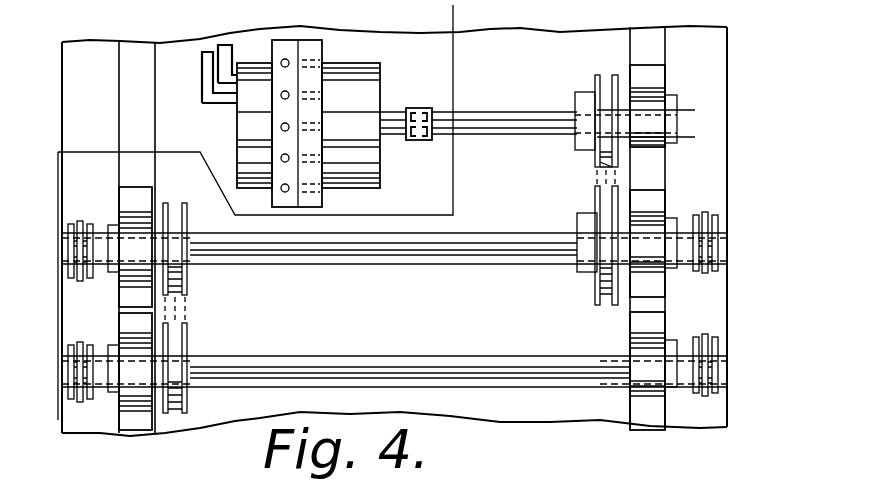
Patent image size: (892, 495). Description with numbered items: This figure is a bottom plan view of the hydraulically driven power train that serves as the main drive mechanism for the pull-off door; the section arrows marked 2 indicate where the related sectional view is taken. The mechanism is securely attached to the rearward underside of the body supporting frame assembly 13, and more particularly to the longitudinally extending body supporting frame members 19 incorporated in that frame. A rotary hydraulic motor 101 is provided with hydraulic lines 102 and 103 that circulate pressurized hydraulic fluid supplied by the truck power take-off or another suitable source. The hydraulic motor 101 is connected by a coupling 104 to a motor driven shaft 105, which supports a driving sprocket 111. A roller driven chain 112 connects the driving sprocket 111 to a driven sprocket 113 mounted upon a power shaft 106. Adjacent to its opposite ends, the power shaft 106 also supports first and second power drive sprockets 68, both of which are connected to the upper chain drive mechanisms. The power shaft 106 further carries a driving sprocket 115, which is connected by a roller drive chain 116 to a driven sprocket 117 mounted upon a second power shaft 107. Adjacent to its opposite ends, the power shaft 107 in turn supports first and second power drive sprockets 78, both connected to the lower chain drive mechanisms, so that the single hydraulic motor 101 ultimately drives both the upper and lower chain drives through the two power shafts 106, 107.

The body supporting frame assembly 13 is at (86, 42).
The body supporting frame members 19 is at (163, 427).
The section line 2 is at (452, 13).
The power drive sprockets 68 is at (89, 278).
The power drive sprockets 78 is at (83, 343).
The rotary hydraulic motor 101 is at (363, 62).
The hydraulic line 102 is at (215, 57).
The hydraulic line 103 is at (207, 92).
The coupling 104 is at (420, 108).
The motor driven shaft 105 is at (487, 118).
The power shaft 106 is at (213, 232).
The power shaft 107 is at (267, 370).
The driving sprocket 111 is at (597, 163).
The roller driven chain 112 is at (592, 177).
The driven sprocket 113 is at (596, 284).
The driving sprocket 115 is at (175, 203).
The roller drive chain 116 is at (185, 307).
The driven sprocket 117 is at (172, 413).